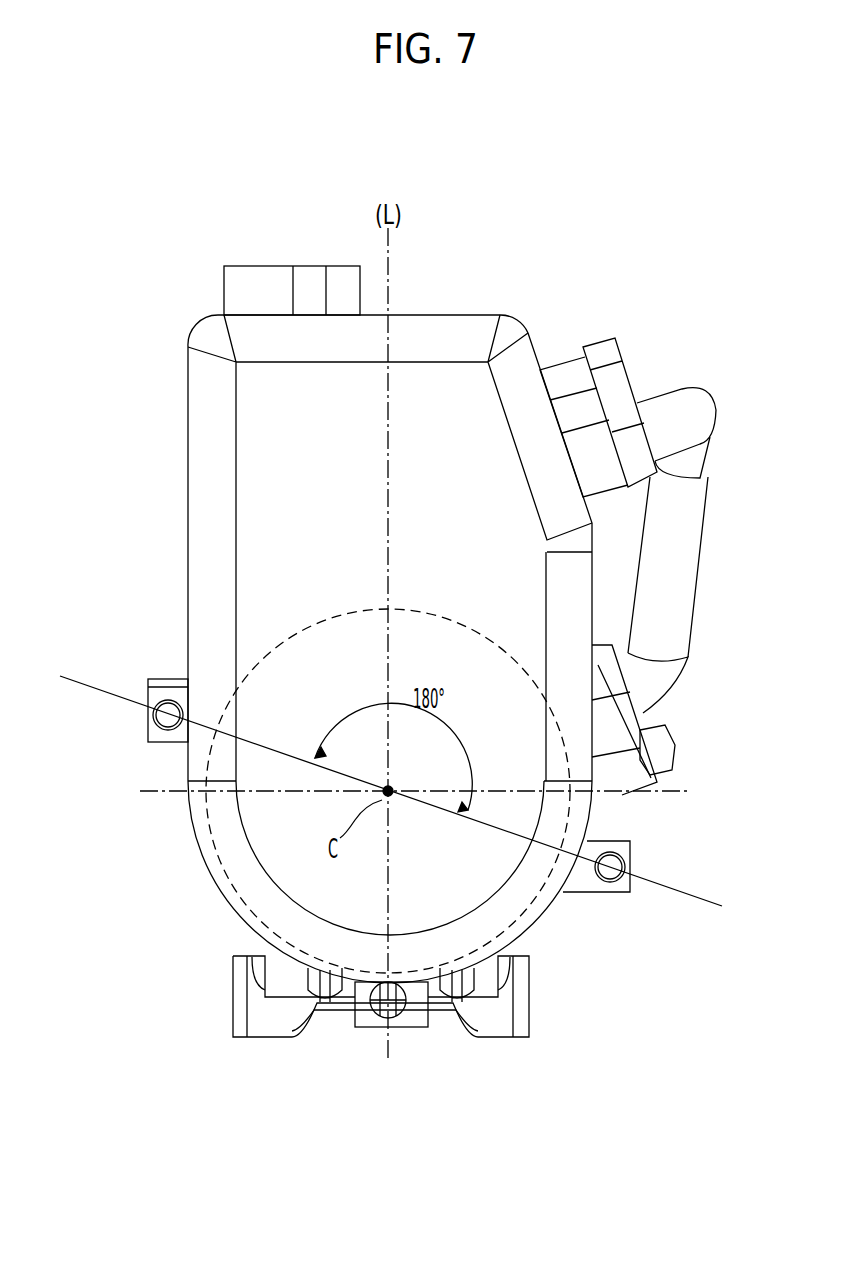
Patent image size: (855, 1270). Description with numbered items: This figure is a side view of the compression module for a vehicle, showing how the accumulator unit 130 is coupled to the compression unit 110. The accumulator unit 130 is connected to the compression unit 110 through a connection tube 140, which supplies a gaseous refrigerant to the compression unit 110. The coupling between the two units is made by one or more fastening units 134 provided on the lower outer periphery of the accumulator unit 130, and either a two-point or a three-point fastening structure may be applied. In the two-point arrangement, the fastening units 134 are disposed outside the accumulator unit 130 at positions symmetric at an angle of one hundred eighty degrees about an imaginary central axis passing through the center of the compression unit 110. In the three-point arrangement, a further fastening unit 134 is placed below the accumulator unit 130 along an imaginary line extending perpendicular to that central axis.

The compression unit 110 is at (462, 618).
The accumulator unit 130 is at (255, 393).
The fastening unit 134 is at (162, 690).
The connection tube 140 is at (685, 530).